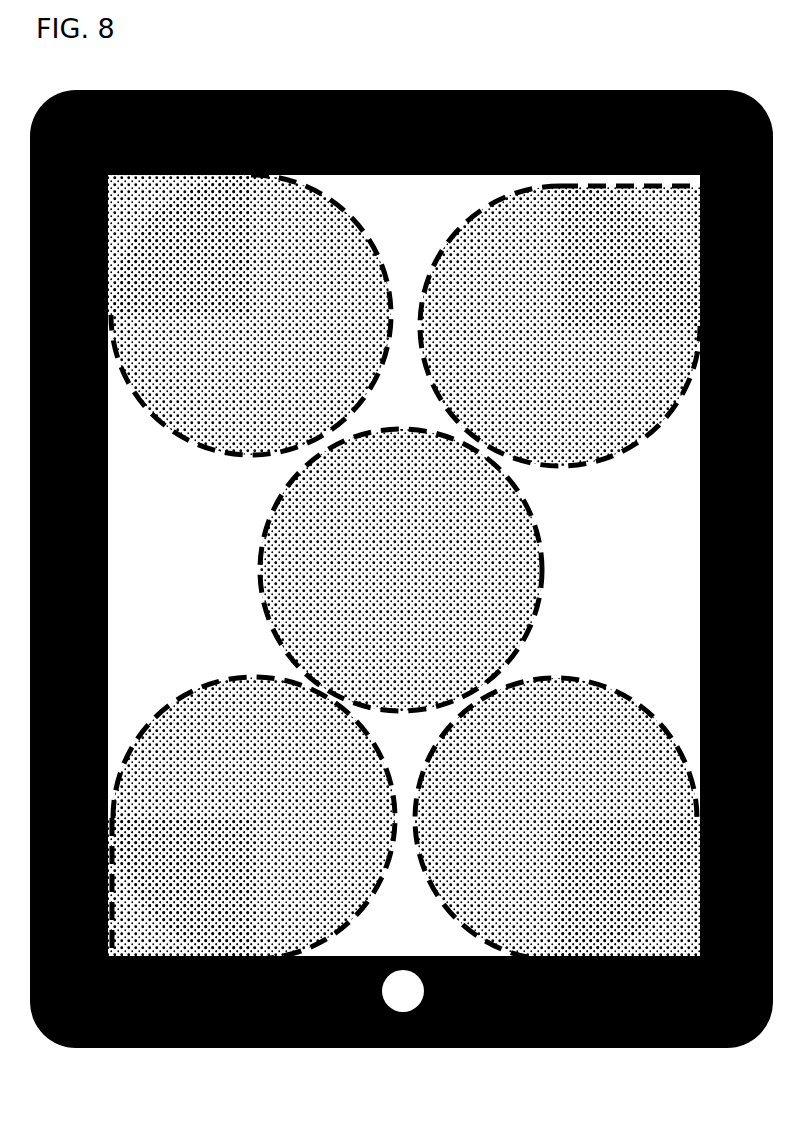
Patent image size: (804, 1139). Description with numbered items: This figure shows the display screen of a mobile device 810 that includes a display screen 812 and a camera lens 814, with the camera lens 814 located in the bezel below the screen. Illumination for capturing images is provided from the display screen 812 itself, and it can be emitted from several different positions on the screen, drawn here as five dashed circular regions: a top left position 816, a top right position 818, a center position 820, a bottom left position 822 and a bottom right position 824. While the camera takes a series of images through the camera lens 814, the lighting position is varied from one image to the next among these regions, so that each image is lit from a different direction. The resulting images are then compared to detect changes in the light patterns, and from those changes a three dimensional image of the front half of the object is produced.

The mobile device 810 is at (643, 82).
The display screen 812 is at (395, 228).
The camera lens 814 is at (395, 1040).
The top left illumination position 816 is at (249, 315).
The top right illumination position 818 is at (560, 326).
The center illumination position 820 is at (401, 570).
The bottom left illumination position 822 is at (251, 818).
The bottom right illumination position 824 is at (557, 819).